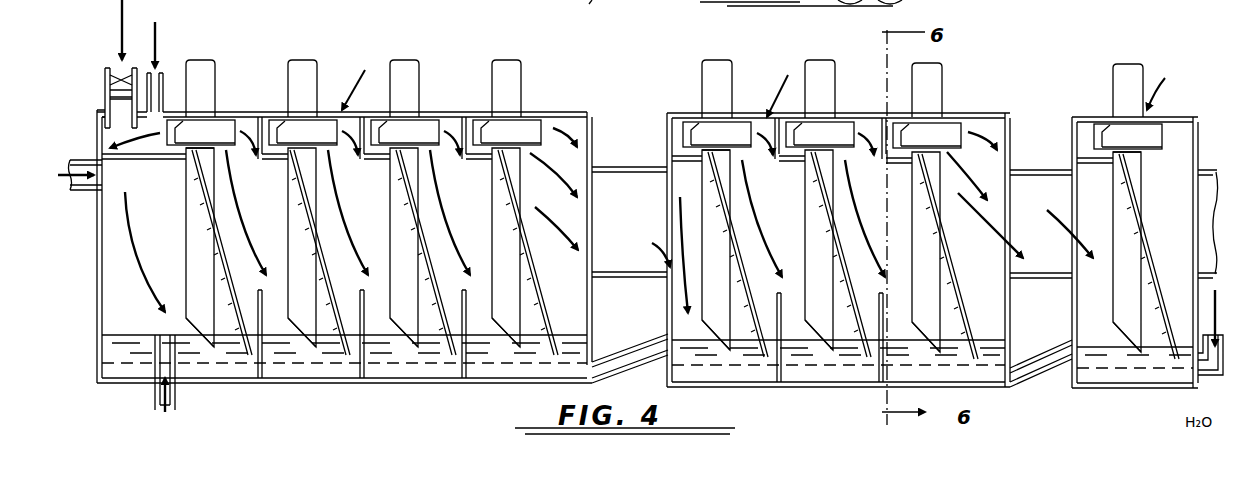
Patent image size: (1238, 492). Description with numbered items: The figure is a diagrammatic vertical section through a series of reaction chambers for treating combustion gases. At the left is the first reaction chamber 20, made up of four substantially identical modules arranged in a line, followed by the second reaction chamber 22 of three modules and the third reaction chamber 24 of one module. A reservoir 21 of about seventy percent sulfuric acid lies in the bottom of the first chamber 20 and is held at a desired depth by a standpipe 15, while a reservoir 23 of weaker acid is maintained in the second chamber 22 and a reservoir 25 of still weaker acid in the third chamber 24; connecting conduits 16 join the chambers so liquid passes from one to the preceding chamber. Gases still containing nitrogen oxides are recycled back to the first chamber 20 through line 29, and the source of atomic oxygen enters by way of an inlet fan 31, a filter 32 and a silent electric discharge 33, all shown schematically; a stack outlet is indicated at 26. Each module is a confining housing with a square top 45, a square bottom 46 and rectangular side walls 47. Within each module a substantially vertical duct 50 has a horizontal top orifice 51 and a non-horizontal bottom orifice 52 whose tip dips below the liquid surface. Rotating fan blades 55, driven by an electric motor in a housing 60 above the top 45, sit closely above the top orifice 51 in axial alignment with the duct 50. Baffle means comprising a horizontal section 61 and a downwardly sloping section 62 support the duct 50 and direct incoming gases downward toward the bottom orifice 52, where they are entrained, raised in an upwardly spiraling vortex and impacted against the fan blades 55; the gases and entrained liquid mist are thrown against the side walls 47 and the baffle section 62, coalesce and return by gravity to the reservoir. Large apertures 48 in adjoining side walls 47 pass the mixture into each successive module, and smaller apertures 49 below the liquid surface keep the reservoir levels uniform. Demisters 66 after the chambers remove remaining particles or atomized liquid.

The standpipe 15 is at (176, 362).
The connecting conduit 16 is at (620, 373).
The first reaction chamber 20 is at (349, 87).
The reservoir 21 is at (108, 357).
The second reaction chamber 22 is at (773, 92).
The reservoir 23 is at (827, 381).
The third reaction chamber 24 is at (1166, 88).
The reservoir 25 is at (1130, 380).
The gas outlet 26 is at (587, 12).
The line 29 is at (158, 25).
The inlet fan 31 is at (110, 70).
The filter 32 is at (108, 90).
The silent electric discharge 33 is at (104, 108).
The top surface 45 is at (222, 113).
The bottom surface 46 is at (147, 379).
The side wall 47 is at (97, 265).
The aperture 48 is at (278, 216).
The aperture 49 is at (263, 377).
The vertical duct 50 is at (188, 210).
The top orifice 51 is at (186, 149).
The bottom orifice 52 is at (186, 323).
The rotating fan blades 55 is at (664, 134).
The housing 60 is at (214, 62).
The horizontal section 61 is at (127, 159).
The downwardly sloping section 62 is at (215, 237).
The demister 66 is at (607, 278).